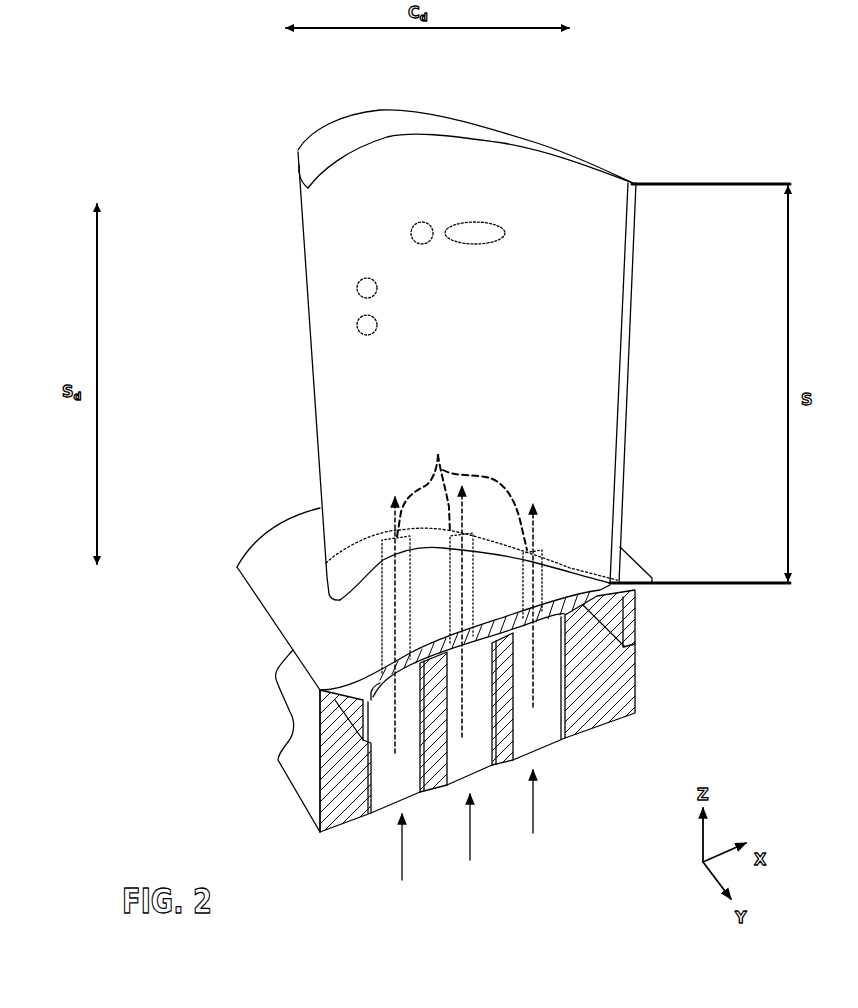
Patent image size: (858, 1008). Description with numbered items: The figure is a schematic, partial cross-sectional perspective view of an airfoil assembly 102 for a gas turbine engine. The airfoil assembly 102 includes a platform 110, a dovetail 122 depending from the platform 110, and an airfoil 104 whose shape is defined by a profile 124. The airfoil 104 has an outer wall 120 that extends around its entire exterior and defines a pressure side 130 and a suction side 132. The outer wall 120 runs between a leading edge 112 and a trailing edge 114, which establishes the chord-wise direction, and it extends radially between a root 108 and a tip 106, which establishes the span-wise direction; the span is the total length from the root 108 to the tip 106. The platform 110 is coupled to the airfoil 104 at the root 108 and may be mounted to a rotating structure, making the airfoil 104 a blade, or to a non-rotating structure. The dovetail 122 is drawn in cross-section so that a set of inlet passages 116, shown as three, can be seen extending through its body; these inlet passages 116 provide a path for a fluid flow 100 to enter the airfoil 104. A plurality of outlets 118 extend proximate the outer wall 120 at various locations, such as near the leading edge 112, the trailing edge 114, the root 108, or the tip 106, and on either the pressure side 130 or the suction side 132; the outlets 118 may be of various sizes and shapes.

The fluid flow 100 is at (469, 693).
The airfoil assembly 102 is at (183, 171).
The airfoil 104 is at (298, 148).
The tip 106 is at (498, 142).
The root 108 is at (328, 560).
The platform 110 is at (312, 628).
The leading edge 112 is at (315, 421).
The trailing edge 114 is at (632, 348).
The inlet passages 116 is at (438, 456).
The outlets 118 is at (463, 222).
The outer wall 120 is at (510, 185).
The dovetail 122 is at (298, 770).
The profile 124 is at (387, 125).
The pressure side 130 is at (573, 308).
The suction side 132 is at (598, 168).